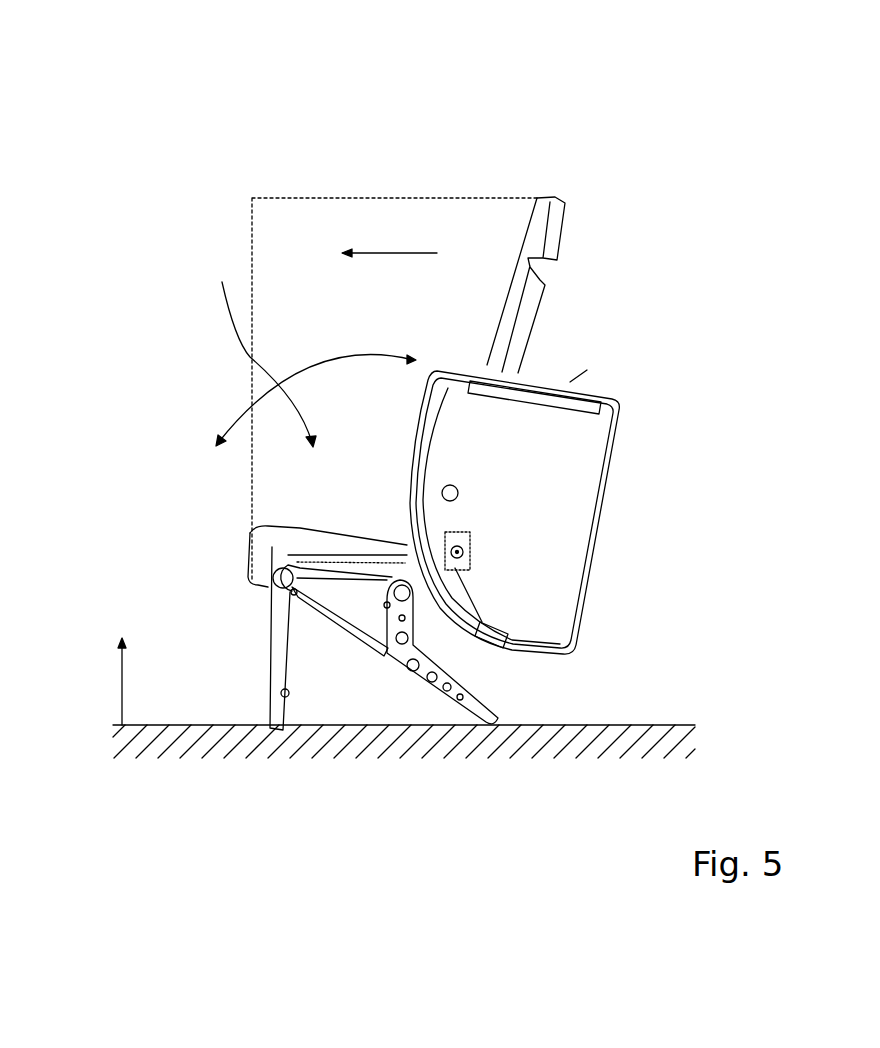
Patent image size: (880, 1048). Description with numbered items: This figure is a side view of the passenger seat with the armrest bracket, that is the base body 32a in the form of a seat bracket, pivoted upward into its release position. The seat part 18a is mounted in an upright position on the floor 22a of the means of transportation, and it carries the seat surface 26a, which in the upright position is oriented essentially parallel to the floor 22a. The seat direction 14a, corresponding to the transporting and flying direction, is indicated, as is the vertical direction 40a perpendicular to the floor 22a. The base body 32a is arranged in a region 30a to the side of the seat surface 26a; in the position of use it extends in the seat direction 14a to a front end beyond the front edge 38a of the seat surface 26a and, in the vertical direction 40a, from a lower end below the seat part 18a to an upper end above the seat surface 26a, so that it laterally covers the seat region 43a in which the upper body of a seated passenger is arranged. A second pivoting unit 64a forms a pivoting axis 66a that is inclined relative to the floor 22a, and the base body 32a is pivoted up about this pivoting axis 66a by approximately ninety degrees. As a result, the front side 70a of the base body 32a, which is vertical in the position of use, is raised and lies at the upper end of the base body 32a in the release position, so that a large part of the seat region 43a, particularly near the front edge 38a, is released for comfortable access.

The seat direction 14a is at (390, 253).
The seat part 18a is at (240, 553).
The floor 22a is at (667, 715).
The seat surface 26a is at (302, 513).
The region to the side of the seat surface 30a is at (309, 350).
The base body 32a is at (582, 447).
The front edge of the seat surface 38a is at (247, 533).
The vertical direction 40a is at (122, 675).
The seat region 43a is at (302, 197).
The second pivoting unit 64a is at (465, 528).
The pivoting axis 66a is at (460, 572).
The front side of the base body 70a is at (572, 370).